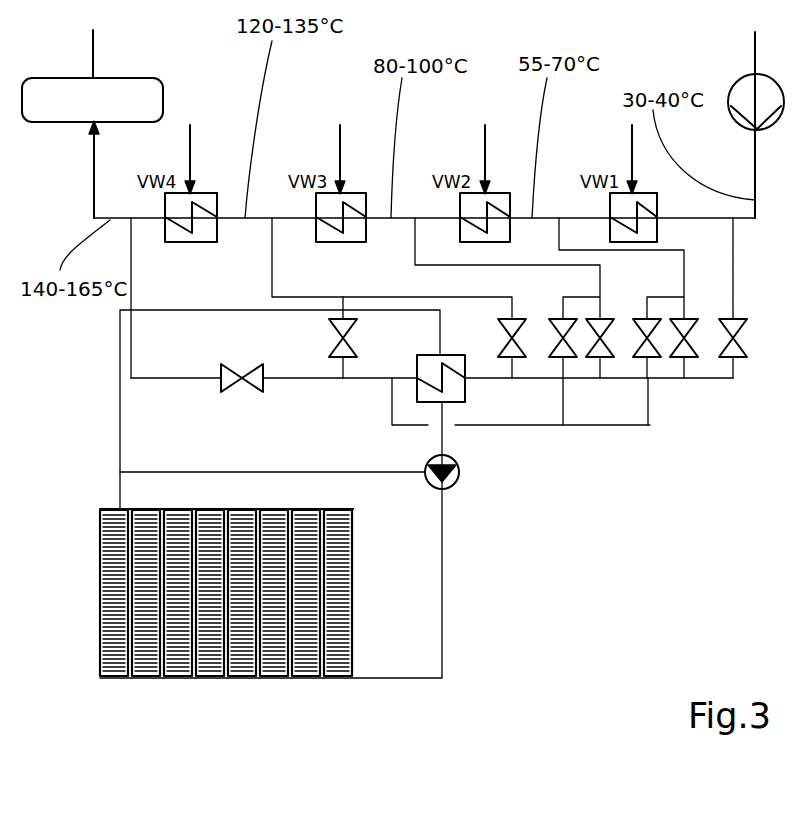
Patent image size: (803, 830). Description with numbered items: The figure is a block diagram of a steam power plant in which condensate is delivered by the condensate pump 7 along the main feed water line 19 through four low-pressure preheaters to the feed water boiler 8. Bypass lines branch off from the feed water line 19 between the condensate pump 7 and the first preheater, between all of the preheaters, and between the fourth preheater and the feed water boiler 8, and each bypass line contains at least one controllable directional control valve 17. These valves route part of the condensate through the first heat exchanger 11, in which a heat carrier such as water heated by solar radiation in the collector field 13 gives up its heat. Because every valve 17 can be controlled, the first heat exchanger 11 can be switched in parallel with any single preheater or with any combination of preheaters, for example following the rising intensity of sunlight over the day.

The condensate pump 7 is at (737, 80).
The feed water boiler 8 is at (140, 78).
The first heat exchanger 11 is at (457, 403).
The collector field 13 is at (301, 708).
The directional control valve 17 is at (343, 367).
The feed water line 19 is at (755, 170).